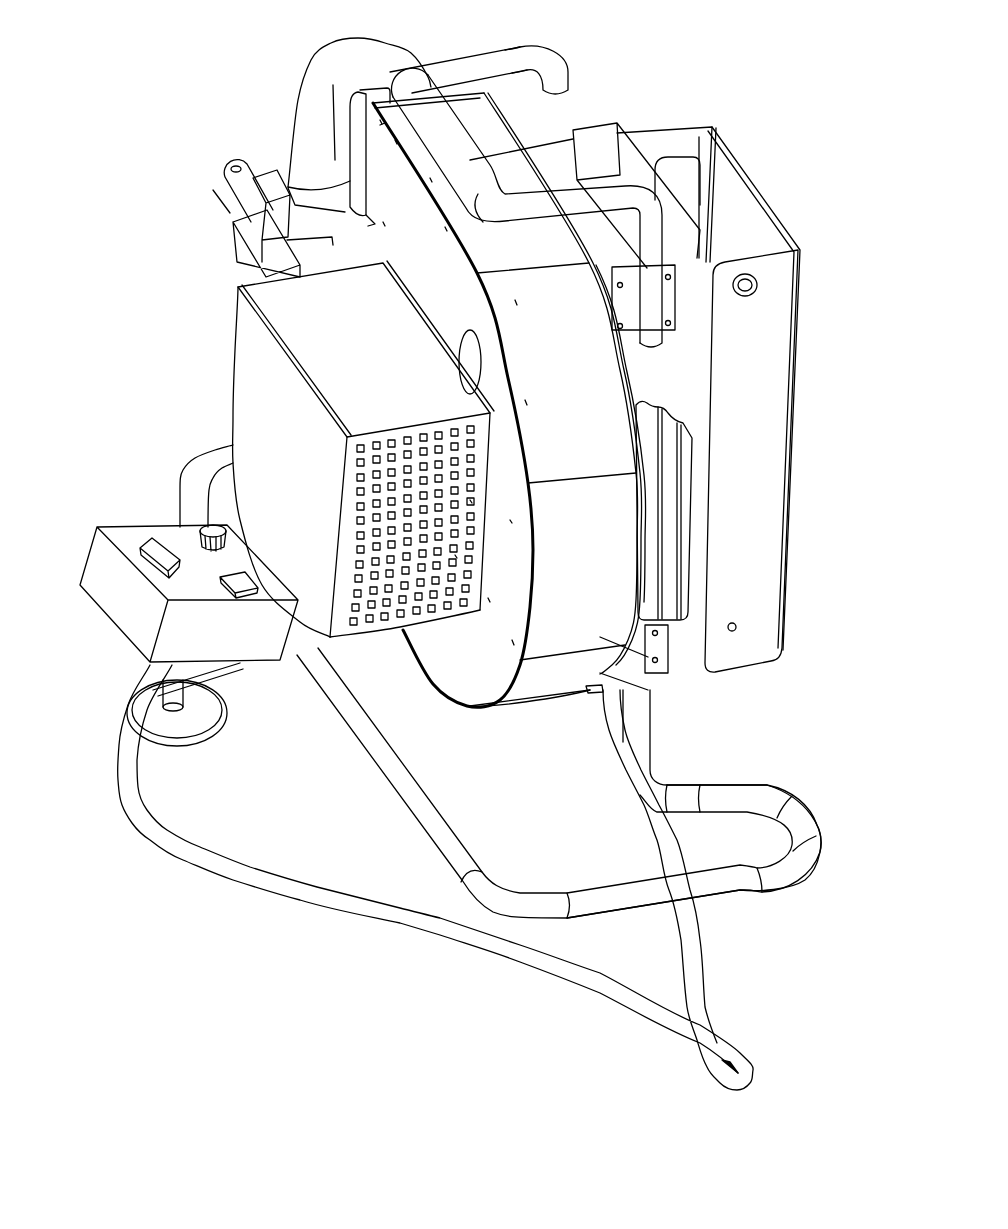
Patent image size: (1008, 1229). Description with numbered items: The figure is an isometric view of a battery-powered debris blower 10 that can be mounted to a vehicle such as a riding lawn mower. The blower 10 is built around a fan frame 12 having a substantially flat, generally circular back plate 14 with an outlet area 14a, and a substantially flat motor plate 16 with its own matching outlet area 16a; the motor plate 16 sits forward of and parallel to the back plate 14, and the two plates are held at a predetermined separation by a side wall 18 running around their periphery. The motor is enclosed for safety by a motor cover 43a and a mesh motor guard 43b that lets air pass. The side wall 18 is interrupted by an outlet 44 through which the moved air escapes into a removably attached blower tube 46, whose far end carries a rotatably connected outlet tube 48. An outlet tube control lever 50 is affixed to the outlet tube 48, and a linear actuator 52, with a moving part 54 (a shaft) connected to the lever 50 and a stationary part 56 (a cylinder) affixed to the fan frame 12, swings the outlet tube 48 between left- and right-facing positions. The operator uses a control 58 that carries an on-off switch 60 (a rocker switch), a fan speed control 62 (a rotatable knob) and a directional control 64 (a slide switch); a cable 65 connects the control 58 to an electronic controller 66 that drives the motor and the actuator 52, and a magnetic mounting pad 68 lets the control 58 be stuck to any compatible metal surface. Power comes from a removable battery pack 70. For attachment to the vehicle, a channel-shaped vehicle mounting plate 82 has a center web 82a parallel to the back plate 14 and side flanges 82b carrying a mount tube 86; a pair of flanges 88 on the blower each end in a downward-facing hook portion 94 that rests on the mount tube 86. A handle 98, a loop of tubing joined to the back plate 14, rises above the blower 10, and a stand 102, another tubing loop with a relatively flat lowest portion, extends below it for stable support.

The battery-powered debris blower 10 is at (197, 323).
The fan frame 12 is at (462, 703).
The back plate 14 is at (593, 683).
The outlet area 14a is at (505, 100).
The motor plate 16 is at (437, 660).
The outlet area 16a is at (380, 148).
The side wall 18 is at (523, 687).
The motor cover 43a is at (250, 390).
The motor guard 43b is at (473, 580).
The outlet 44 is at (381, 93).
The blower tube 46 is at (325, 67).
The outlet tube 48 is at (215, 467).
The outlet tube control lever 50 is at (262, 175).
The actuator 52 is at (221, 236).
The moving part 54 is at (240, 208).
The stationary part 56 is at (243, 258).
The control 58 is at (120, 608).
The on-off switch 60 is at (247, 587).
The fan speed control 62 is at (203, 537).
The directional control 64 is at (147, 558).
The cable 65 is at (327, 900).
The electronic controller 66 is at (687, 545).
The magnetic mounting pad 68 is at (187, 733).
The battery pack 70 is at (603, 137).
The vehicle mounting plate 82 is at (797, 326).
The center web 82a is at (757, 210).
The side flanges 82b is at (700, 133).
The mount tube 86 is at (667, 170).
The flanges 88 is at (660, 137).
The hook portion 94 is at (757, 250).
The handle 98 is at (520, 63).
The stand 102 is at (790, 870).